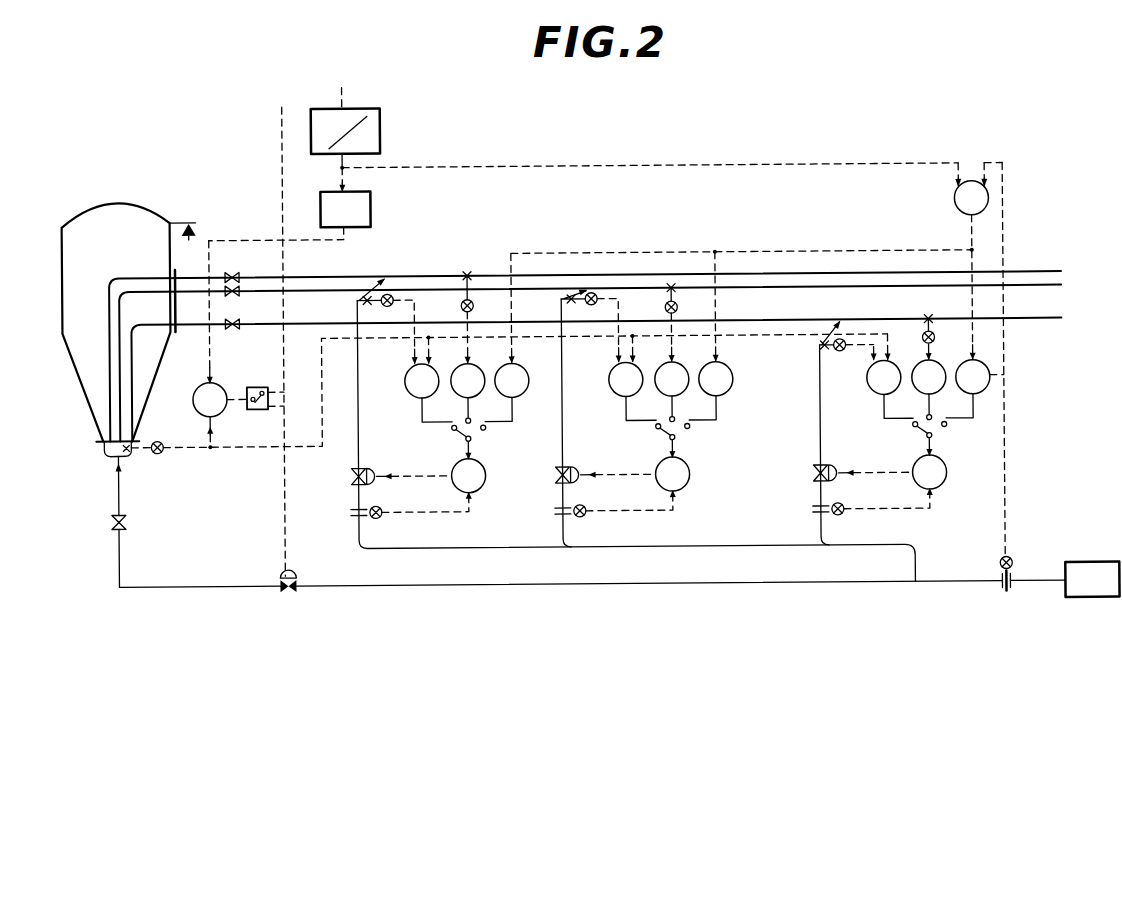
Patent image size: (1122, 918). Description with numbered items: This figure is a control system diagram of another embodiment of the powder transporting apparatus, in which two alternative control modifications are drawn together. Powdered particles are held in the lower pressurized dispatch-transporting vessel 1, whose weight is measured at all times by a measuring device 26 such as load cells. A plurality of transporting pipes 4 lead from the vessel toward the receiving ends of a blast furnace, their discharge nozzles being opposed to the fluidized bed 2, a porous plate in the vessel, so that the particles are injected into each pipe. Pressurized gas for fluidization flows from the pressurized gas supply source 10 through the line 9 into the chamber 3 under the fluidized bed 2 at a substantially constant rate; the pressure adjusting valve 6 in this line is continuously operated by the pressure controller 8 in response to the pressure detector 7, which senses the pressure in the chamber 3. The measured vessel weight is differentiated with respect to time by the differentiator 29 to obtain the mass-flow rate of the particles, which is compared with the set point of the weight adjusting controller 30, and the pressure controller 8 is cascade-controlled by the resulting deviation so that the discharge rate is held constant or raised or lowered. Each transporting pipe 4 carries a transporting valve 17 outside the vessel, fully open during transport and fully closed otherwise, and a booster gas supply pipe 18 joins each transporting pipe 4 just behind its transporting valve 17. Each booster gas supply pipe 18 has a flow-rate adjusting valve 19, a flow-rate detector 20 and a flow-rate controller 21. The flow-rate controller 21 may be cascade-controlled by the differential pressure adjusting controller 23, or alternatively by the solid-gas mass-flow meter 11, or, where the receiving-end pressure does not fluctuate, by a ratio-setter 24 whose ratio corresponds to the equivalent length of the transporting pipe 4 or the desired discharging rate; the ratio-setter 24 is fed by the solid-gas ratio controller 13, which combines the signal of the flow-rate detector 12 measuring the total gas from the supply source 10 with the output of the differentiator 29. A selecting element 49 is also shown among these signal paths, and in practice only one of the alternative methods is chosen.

The transporting vessel 1 is at (63, 320).
The fluidized bed 2 is at (104, 447).
The chamber 3 is at (110, 455).
The transporting pipe 4 is at (323, 330).
The pressure adjusting valve 6 is at (292, 575).
The pressure detector 7 is at (158, 451).
The pressure controller 8 is at (198, 385).
The line 9 is at (413, 586).
The pressurized gas supply source 10 is at (1090, 566).
The solid-gas mass-flow meter 11 is at (480, 388).
The flow-rate detector 12 is at (1011, 561).
The solid-gas ratio controller 13 is at (956, 202).
The transporting valve 17 is at (238, 271).
The booster gas supply pipe 18 is at (362, 411).
The flow-rate adjusting valve 19 is at (368, 468).
The flow-rate detector 20 is at (382, 516).
The flow-rate controller 21 is at (484, 470).
The differential pressure adjusting controller 23 is at (410, 369).
The ratio-setter 24 is at (522, 369).
The measuring device 26 is at (191, 221).
The differentiator 29 is at (383, 128).
The weight adjusting controller 30 is at (373, 209).
The selector switch 49 is at (262, 385).